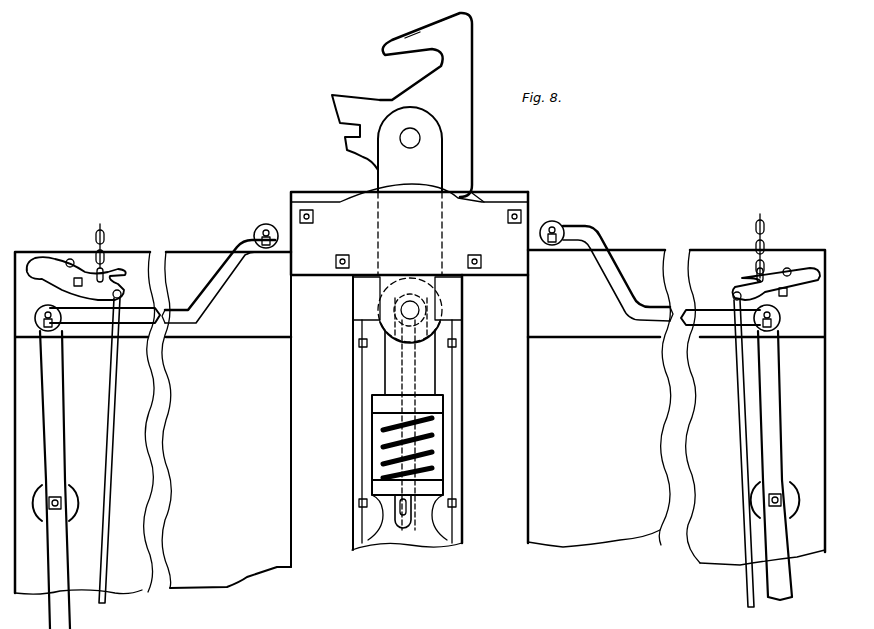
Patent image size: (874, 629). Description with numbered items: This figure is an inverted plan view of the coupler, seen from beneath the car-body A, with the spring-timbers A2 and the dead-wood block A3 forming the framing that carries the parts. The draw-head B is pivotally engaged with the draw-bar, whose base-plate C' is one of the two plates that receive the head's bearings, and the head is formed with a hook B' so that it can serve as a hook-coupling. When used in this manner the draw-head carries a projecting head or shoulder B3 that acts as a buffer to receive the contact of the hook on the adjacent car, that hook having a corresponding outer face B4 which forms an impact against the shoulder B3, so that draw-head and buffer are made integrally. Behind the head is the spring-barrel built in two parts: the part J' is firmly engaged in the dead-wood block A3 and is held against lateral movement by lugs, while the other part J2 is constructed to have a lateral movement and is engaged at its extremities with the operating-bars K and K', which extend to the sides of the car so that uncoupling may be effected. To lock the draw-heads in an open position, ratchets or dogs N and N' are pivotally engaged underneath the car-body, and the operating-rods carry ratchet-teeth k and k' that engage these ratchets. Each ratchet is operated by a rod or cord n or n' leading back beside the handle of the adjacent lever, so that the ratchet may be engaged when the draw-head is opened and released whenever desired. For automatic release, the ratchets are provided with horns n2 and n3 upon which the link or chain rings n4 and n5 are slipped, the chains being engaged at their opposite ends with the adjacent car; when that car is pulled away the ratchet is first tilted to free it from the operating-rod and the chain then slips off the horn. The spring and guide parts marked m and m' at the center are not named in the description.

The car-body A is at (420, 422).
The spring-timbers A2 is at (409, 379).
The dead-wood block A3 is at (317, 199).
The draw-head B is at (426, 105).
The hook B' is at (420, 37).
The projecting head or shoulder B3 is at (356, 132).
The outer face of hook B4 is at (450, 19).
The base-plate C' is at (410, 149).
The spring m is at (407, 410).
The spring rod loop m' is at (415, 512).
The fixed part of spring-barrel J' is at (270, 226).
The movable part of spring-barrel J2 is at (549, 222).
The operating-bar K is at (353, 427).
The operating-bar K' is at (480, 420).
The ratchet-tooth k is at (97, 312).
The ratchet-tooth k' is at (730, 318).
The rod or cord n is at (105, 446).
The rod or cord n' is at (738, 449).
The horn n2 is at (112, 268).
The horn n3 is at (750, 269).
The link or chain ring n4 is at (112, 246).
The link or chain ring n5 is at (773, 246).
The ratchet or dog N is at (76, 278).
The ratchet or dog N' is at (777, 288).